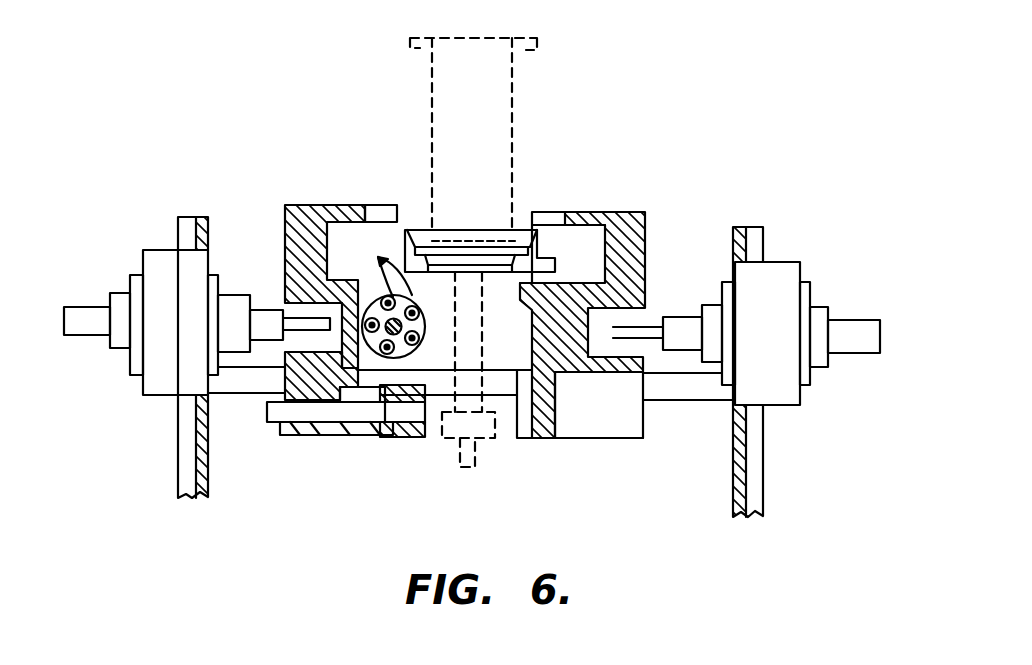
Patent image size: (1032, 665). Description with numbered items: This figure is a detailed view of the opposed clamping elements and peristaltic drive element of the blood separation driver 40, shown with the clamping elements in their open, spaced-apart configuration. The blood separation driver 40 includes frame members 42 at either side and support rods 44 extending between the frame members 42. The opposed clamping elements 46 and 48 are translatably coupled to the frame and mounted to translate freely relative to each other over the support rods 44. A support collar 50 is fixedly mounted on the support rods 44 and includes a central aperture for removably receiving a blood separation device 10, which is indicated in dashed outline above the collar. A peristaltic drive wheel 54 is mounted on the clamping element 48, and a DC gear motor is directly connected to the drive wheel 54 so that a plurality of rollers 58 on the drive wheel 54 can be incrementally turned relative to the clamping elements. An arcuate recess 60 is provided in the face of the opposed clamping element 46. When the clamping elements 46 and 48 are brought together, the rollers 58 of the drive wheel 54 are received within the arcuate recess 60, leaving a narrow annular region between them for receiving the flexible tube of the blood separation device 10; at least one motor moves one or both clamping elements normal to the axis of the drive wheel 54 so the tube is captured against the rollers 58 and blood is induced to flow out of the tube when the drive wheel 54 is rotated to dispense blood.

The blood separation device 10 is at (510, 40).
The blood separation driver 40 is at (828, 172).
The frame members 42 is at (182, 468).
The support rods 44 is at (687, 388).
The opposed clamping element 46 is at (618, 210).
The clamping element 48 is at (302, 205).
The support collar 50 is at (463, 231).
The peristaltic drive wheel 54 is at (430, 318).
The rollers 58 is at (372, 266).
The arcuate recess 60 is at (535, 340).